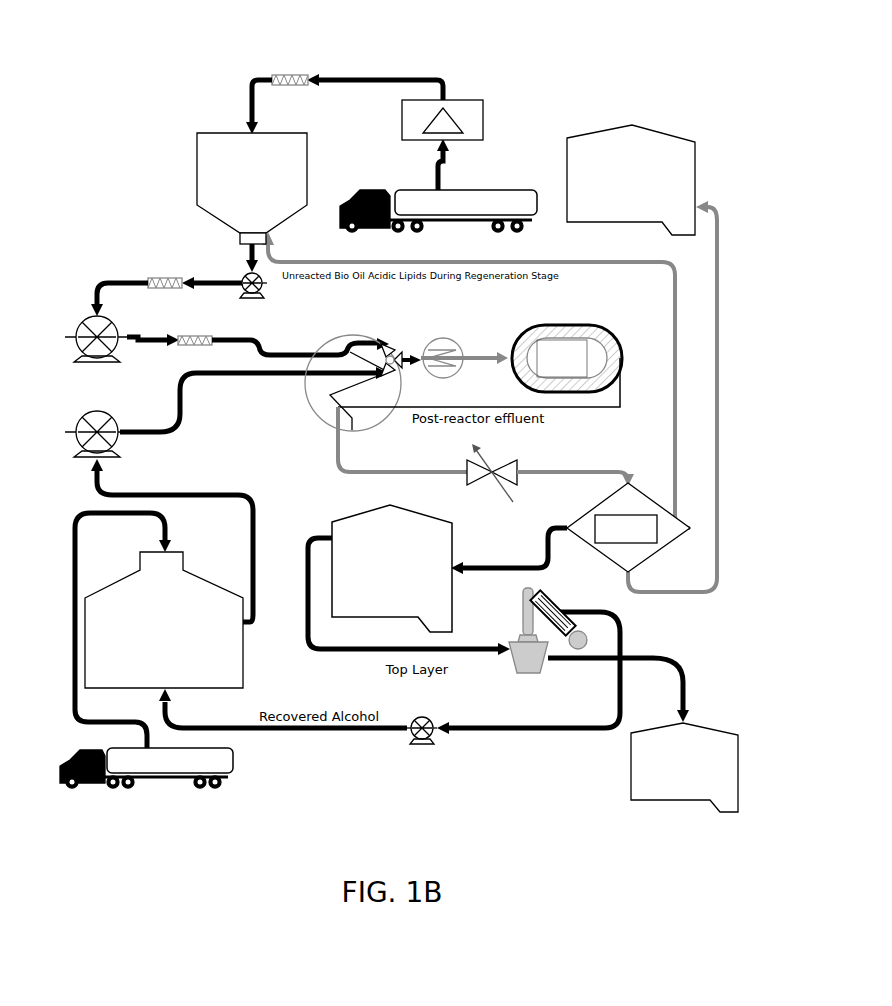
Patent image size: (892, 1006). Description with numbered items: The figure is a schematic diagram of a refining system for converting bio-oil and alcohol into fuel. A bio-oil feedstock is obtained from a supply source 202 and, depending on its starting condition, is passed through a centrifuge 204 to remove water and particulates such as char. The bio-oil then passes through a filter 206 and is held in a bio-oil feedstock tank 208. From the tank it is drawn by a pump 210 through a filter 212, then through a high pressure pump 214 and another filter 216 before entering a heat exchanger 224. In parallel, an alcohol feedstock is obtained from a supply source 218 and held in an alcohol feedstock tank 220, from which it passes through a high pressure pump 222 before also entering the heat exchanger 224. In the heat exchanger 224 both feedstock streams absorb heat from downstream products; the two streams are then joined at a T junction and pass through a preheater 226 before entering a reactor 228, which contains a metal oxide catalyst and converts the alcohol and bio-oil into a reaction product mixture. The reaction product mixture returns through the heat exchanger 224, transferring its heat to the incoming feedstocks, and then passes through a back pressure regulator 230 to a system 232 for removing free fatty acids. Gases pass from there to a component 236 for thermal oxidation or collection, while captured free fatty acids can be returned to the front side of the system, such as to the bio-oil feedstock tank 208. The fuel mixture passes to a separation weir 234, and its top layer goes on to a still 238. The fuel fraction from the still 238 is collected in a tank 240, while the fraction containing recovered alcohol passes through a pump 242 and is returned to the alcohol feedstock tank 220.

The supply source 202 is at (498, 194).
The centrifuge 204 is at (467, 108).
The filter 206 is at (288, 72).
The bio-oil feedstock tank 208 is at (213, 145).
The pump 210 is at (264, 290).
The filter 212 is at (150, 278).
The high pressure pump 214 is at (88, 317).
The filter 216 is at (184, 346).
The supply source 218 is at (225, 763).
The alcohol feedstock tank 220 is at (188, 588).
The high pressure pump 222 is at (78, 423).
The heat exchanger 224 is at (315, 395).
The preheater 226 is at (458, 368).
The reactor 228 is at (613, 346).
The back pressure regulator 230 is at (477, 477).
The system for removing free fatty acids 232 is at (585, 522).
The separation weir 234 is at (347, 527).
The component for thermal oxidation or collection 236 is at (615, 135).
The still 238 is at (518, 663).
The tank 240 is at (705, 732).
The pump 242 is at (427, 717).